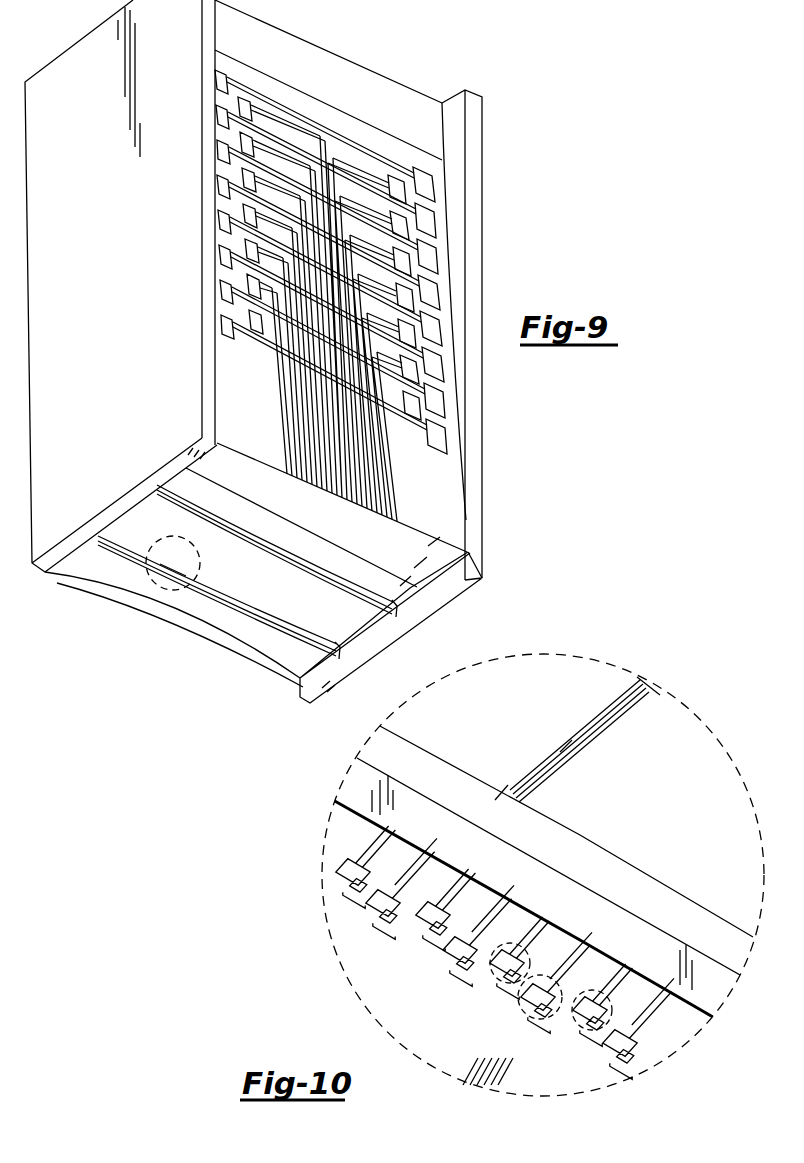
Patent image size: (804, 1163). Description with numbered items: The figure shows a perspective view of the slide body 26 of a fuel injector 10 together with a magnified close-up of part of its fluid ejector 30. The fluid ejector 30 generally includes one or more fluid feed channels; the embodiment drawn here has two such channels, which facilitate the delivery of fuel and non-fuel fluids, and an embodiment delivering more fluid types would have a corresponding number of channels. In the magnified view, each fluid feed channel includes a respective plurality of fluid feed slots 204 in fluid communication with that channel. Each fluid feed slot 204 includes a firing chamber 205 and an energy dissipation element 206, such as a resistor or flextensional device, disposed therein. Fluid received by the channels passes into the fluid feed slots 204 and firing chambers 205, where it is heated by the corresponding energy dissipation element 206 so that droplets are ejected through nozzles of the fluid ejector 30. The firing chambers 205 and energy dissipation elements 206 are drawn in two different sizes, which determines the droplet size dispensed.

In FIG. 9, the electrical connector assembly 10 is at (172, 592).
In FIG. 9, the slide body 26 is at (91, 48).
In FIG. 9, the fluid ejector 30 is at (280, 581).
In FIG. 10, the fluid feed slot 204 is at (520, 950).
In FIG. 10, the firing chamber 205 is at (588, 1030).
In FIG. 10, the energy dissipation element 206 is at (440, 912).